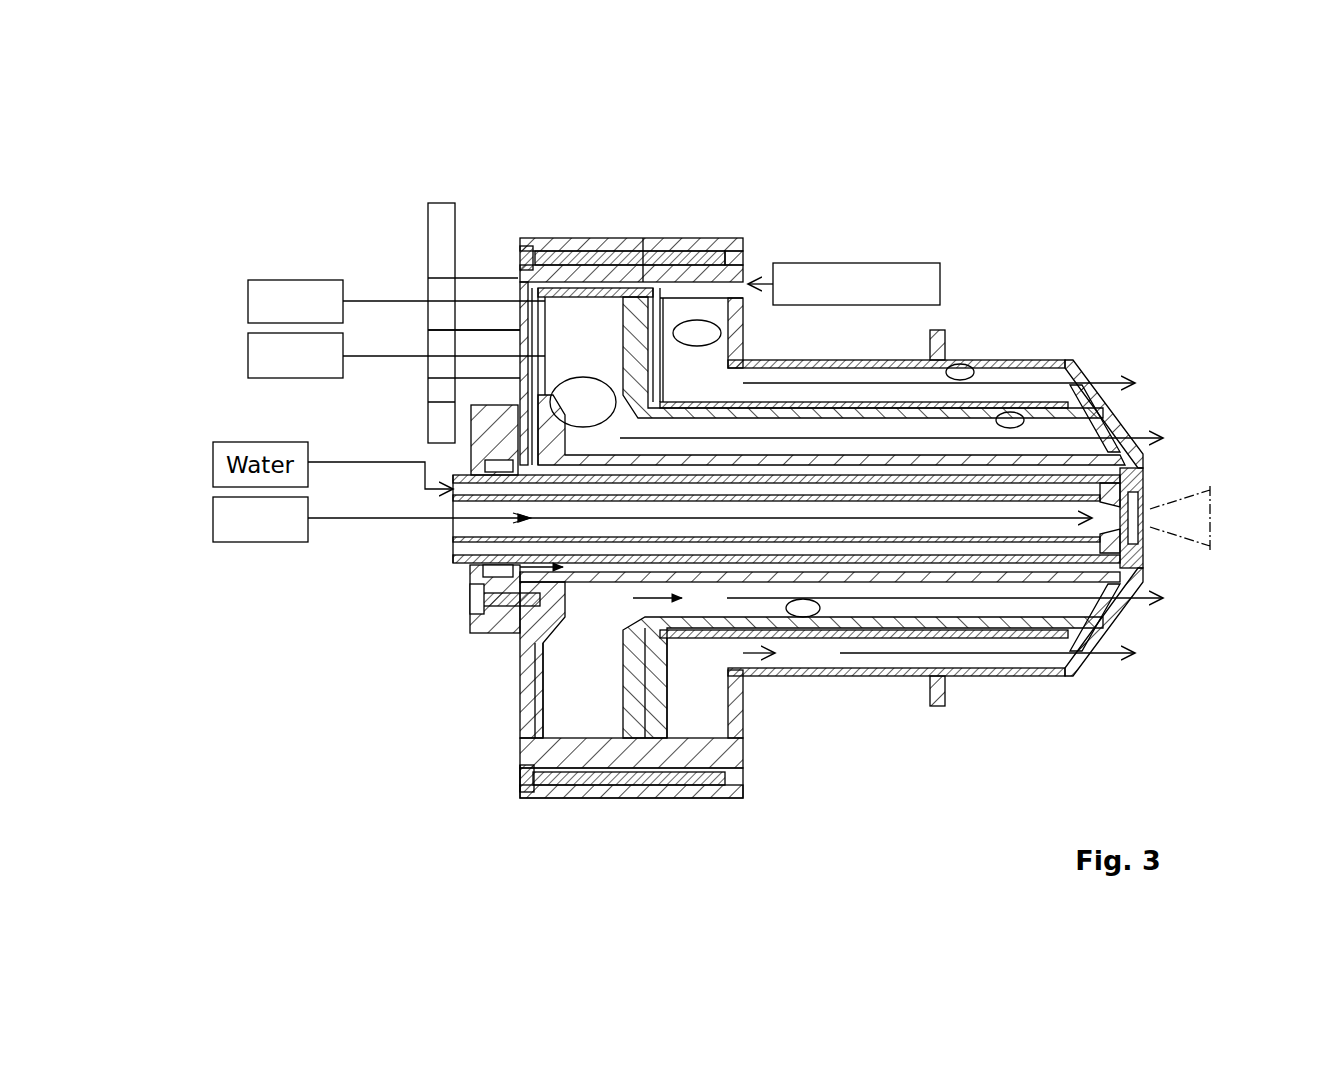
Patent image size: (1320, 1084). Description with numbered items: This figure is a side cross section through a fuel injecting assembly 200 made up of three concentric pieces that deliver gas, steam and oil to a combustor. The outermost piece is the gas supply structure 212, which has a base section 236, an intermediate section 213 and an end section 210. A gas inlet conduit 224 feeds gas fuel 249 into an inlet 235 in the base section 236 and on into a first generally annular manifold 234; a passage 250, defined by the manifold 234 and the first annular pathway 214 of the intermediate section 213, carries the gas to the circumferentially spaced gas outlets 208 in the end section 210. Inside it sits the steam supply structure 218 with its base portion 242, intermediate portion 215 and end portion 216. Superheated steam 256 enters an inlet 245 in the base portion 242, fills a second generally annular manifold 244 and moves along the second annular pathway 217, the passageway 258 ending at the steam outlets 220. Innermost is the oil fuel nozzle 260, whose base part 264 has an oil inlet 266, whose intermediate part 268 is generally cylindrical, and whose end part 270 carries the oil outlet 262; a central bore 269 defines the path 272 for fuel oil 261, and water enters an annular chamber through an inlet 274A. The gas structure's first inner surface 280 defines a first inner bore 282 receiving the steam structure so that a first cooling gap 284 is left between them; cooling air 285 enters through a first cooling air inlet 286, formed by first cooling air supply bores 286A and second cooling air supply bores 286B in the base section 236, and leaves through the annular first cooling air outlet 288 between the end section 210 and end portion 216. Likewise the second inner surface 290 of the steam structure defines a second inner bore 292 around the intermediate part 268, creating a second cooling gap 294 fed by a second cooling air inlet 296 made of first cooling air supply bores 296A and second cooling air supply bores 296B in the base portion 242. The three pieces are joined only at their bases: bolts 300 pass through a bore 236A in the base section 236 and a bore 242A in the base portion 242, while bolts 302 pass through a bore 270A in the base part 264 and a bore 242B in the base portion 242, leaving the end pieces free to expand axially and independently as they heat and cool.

The fuel injecting assembly 200 is at (1098, 232).
The gas outlets 208 is at (1100, 385).
The end section 210 is at (1066, 356).
The gas supply structure 212 is at (730, 813).
The intermediate section 213 is at (852, 688).
The first annular pathway 214 is at (972, 362).
The intermediate portion 215 is at (963, 634).
The end portion 216 is at (1120, 657).
The second annular pathway 217 is at (820, 614).
The steam supply structure 218 is at (550, 810).
The steam outlets 220 is at (1110, 408).
The gas inlet conduit 224 is at (456, 256).
The first generally annular manifold 234 is at (752, 281).
The inlet 235 is at (730, 332).
The base section 236 is at (754, 772).
The bore 236A is at (712, 802).
The base portion 242 is at (533, 716).
The bore 242A is at (598, 780).
The bore 242B is at (543, 693).
The second generally annular manifold 244 is at (516, 755).
The inlet 245 is at (585, 392).
The gas fuel 249 is at (280, 280).
The passage 250 is at (685, 705).
The superheated steam 256 is at (248, 355).
The passageway 258 is at (640, 598).
The oil fuel nozzle 260 is at (440, 548).
The fuel oil 261 is at (213, 522).
The oil outlet 262 is at (1142, 520).
The base part 264 is at (448, 580).
The oil inlet 266 is at (455, 538).
The intermediate part 268 is at (470, 610).
The central bore 269 is at (500, 490).
The end part 270 is at (1130, 463).
The bore 270A is at (550, 720).
The path 272 is at (522, 527).
The inlet 274A is at (487, 462).
The first inner surface 280 is at (1008, 415).
The first inner bore 282 is at (1123, 417).
The first cooling gap 284 is at (852, 400).
The cooling air 285 is at (912, 263).
The first cooling air inlet 286 is at (668, 268).
The first cooling air supply bores 286A is at (722, 262).
The second cooling air supply bores 286B is at (700, 270).
The first cooling air outlet 288 is at (1112, 395).
The second inner surface 290 is at (928, 564).
The second inner bore 292 is at (1132, 562).
The second cooling gap 294 is at (1044, 574).
The second cooling air inlet 296 is at (548, 262).
The first cooling air supply bores 296A is at (605, 272).
The second cooling air supply bores 296B is at (518, 313).
The bolts 300 is at (520, 276).
The bolts 302 is at (487, 606).